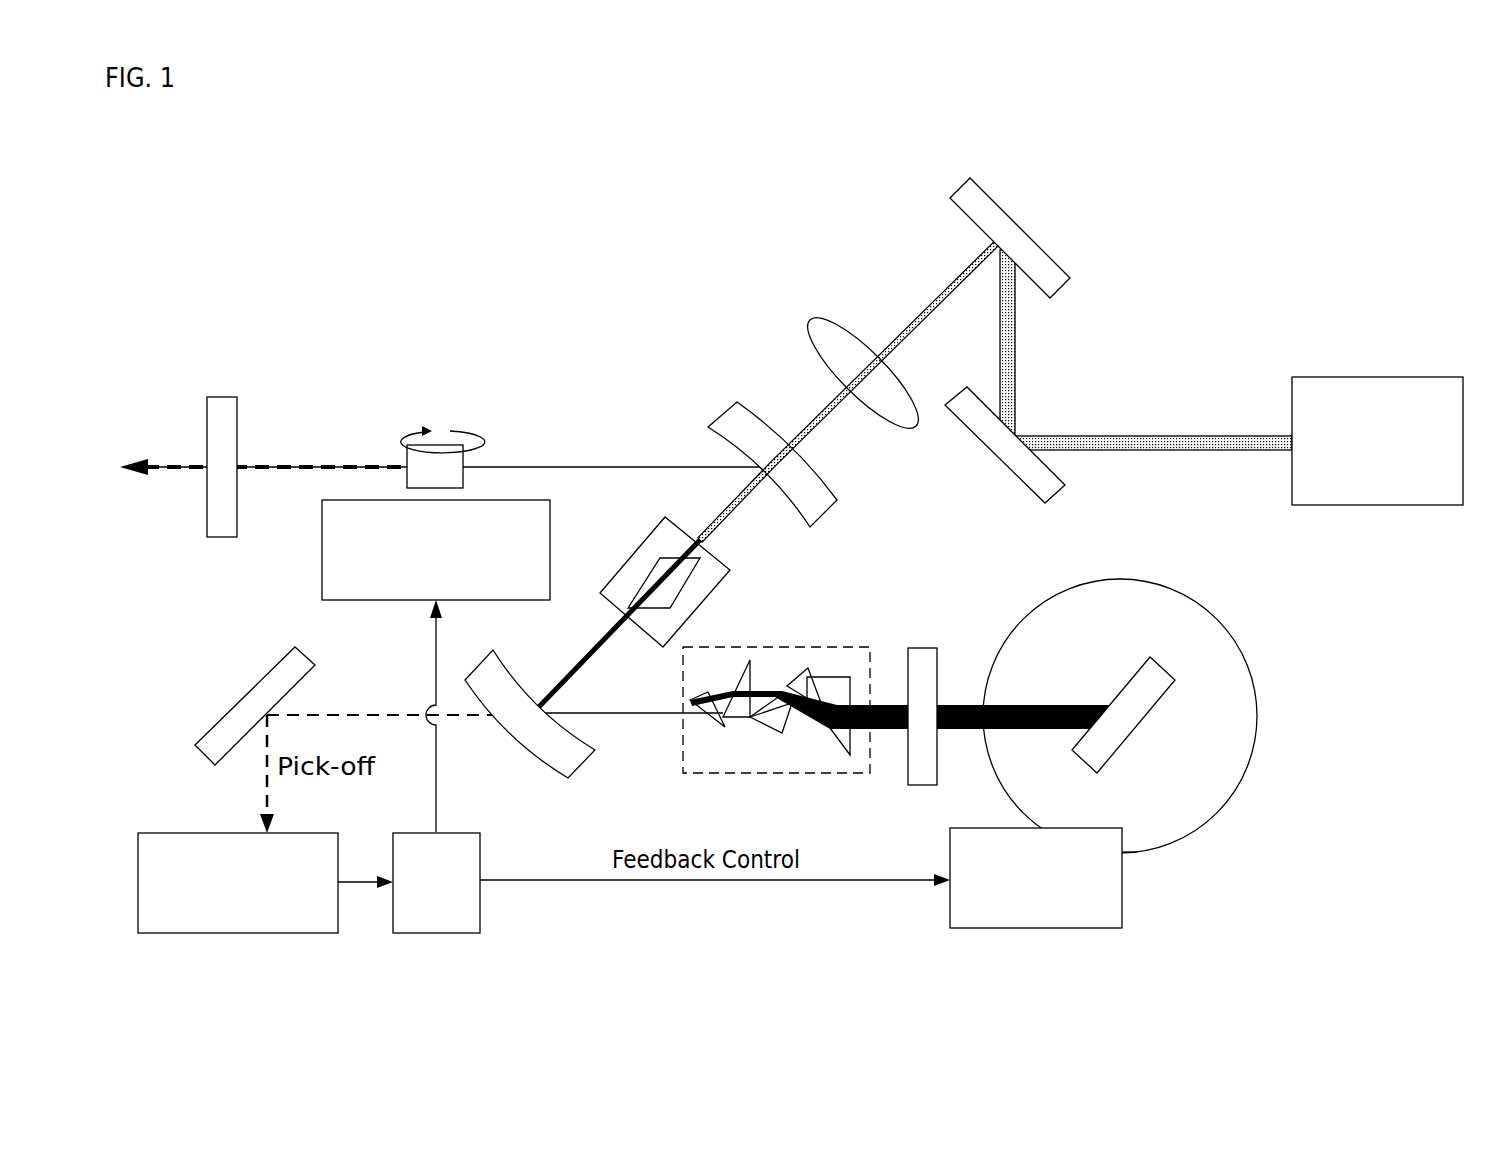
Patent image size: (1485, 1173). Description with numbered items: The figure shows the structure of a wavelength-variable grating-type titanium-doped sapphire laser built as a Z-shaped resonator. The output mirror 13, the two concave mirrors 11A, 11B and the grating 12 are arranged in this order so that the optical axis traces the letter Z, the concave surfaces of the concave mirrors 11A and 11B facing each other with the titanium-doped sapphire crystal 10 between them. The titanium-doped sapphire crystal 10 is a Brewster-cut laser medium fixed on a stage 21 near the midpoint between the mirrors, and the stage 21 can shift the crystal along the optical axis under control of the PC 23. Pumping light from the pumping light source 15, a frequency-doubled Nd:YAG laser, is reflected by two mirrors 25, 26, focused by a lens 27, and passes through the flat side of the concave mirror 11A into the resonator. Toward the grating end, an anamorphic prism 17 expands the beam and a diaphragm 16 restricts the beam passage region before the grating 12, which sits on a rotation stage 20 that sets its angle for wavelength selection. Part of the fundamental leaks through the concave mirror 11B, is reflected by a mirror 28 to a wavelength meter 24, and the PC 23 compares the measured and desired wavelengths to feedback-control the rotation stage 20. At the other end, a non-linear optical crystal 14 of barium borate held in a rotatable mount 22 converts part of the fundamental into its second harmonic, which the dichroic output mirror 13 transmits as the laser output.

The titanium-doped sapphire crystal 10 is at (683, 575).
The concave mirror 11A is at (720, 420).
The concave mirror 11B is at (580, 768).
The grating 12 is at (1160, 693).
The output mirror 13 is at (222, 403).
The non-linear optical crystal 14 is at (463, 460).
The pumping light source 15 is at (1332, 385).
The diaphragm 16 is at (917, 653).
The prism 17 is at (818, 647).
The rotation stage 20 is at (1012, 930).
The stage 21 is at (645, 540).
The mount 22 is at (322, 577).
The PC 23 is at (425, 935).
The wavelength meter 24 is at (160, 935).
The mirror 25 is at (1057, 486).
The mirror 26 is at (1057, 270).
The lens 27 is at (817, 328).
The mirror 28 is at (267, 682).